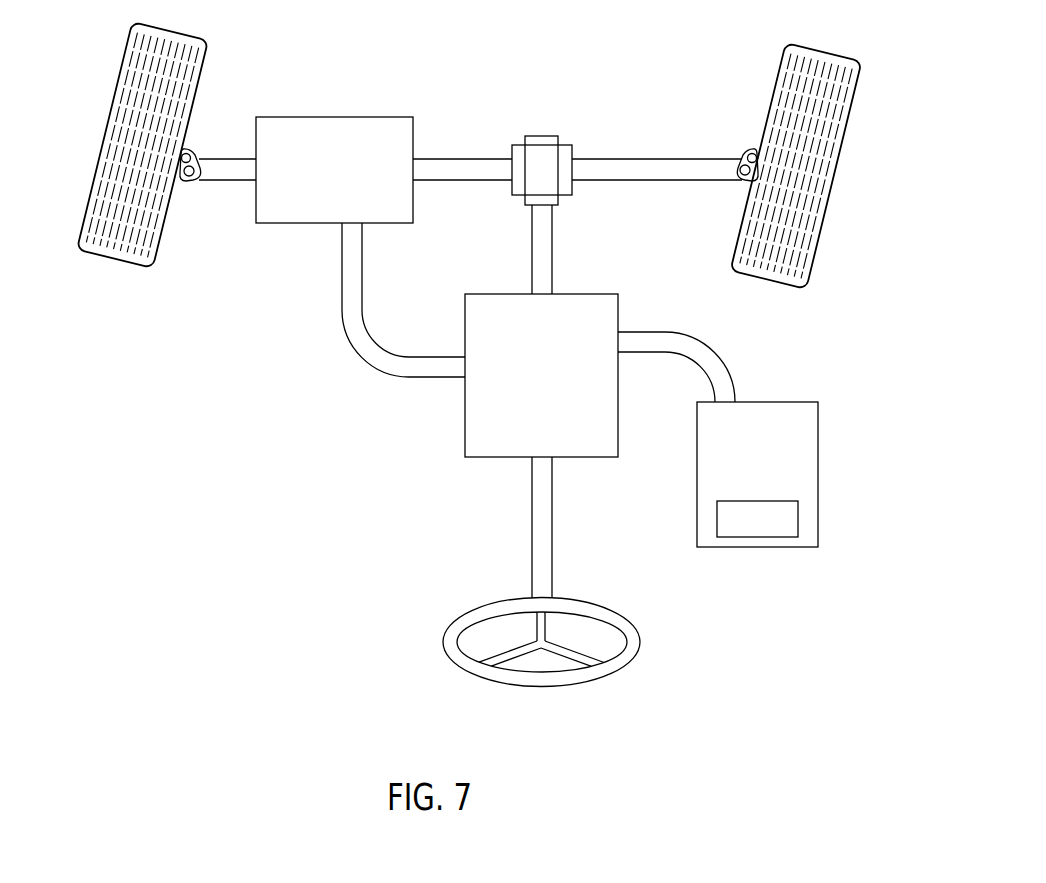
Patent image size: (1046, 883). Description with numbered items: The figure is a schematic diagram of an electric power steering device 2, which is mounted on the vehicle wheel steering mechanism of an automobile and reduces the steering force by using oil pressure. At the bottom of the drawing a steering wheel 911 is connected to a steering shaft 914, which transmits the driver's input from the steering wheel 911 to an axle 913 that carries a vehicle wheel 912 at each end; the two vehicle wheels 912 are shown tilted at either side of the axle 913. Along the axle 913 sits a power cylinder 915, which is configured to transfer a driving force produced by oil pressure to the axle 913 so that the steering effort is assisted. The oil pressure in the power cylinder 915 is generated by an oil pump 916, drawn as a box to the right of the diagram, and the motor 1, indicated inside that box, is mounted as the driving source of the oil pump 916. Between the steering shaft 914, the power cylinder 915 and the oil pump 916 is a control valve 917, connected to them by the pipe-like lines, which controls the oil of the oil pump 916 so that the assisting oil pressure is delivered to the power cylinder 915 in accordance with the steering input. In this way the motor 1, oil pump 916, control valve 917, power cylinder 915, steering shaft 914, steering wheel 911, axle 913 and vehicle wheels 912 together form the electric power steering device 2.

The electric power steering device 2 is at (462, 519).
The motor 1 is at (767, 518).
The steering wheel 911 is at (528, 677).
The vehicle wheel 912 is at (122, 260).
The axle 913 is at (607, 170).
The steering shaft 914 is at (542, 527).
The power cylinder 915 is at (333, 140).
The oil pump 916 is at (798, 461).
The control valve 917 is at (488, 413).